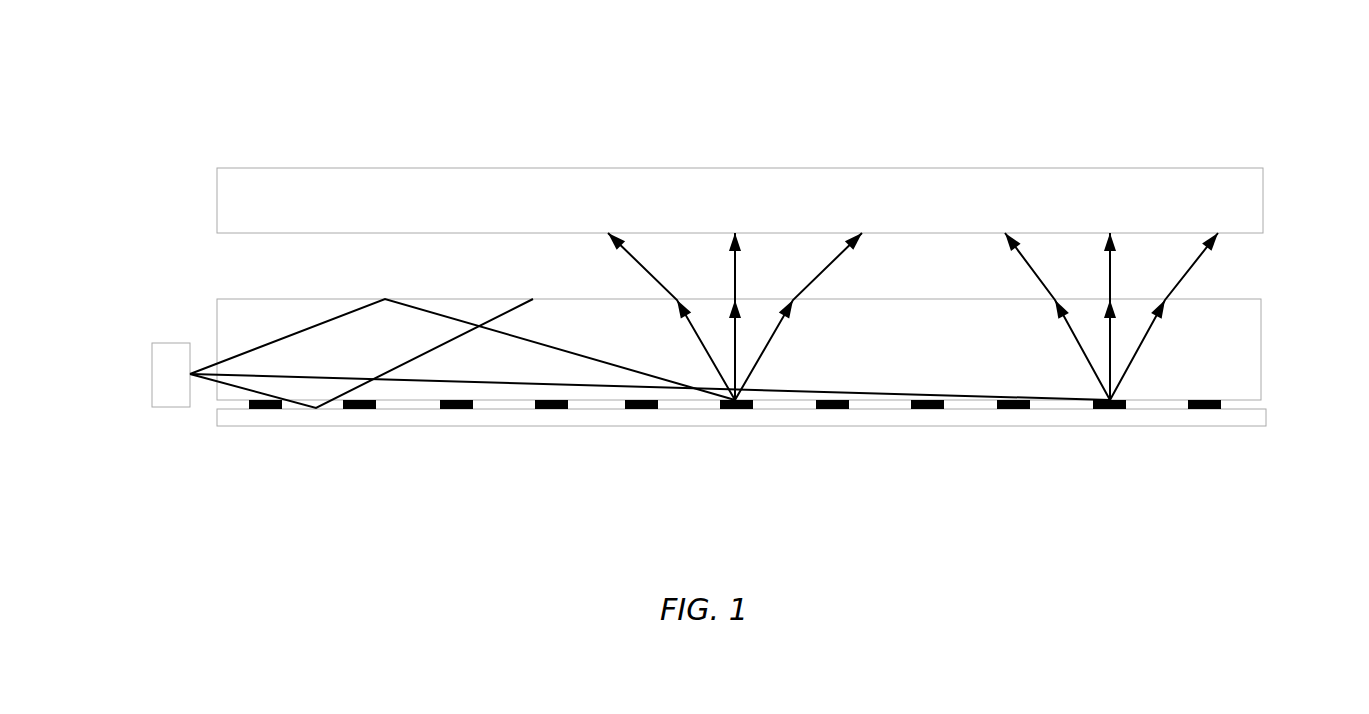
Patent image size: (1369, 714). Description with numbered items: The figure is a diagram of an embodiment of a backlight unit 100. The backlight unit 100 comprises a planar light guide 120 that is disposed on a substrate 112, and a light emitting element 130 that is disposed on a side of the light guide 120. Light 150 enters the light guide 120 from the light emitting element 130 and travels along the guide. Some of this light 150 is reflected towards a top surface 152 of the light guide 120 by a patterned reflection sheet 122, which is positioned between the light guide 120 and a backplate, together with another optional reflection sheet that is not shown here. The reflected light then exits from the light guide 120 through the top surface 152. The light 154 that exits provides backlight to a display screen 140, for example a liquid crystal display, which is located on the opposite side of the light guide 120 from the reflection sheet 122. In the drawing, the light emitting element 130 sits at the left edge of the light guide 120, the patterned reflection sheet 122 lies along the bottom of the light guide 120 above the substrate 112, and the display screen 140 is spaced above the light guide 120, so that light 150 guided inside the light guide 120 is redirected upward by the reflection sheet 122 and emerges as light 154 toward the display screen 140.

The backlight unit 100 is at (229, 92).
The substrate 112 is at (986, 427).
The planar light guide 120 is at (1261, 348).
The patterned reflection sheet 122 is at (455, 408).
The light emitting element 130 is at (168, 350).
The display screen 140 is at (1120, 181).
The light 150 is at (373, 298).
The top surface 152 is at (965, 300).
The light that exits 154 is at (659, 282).